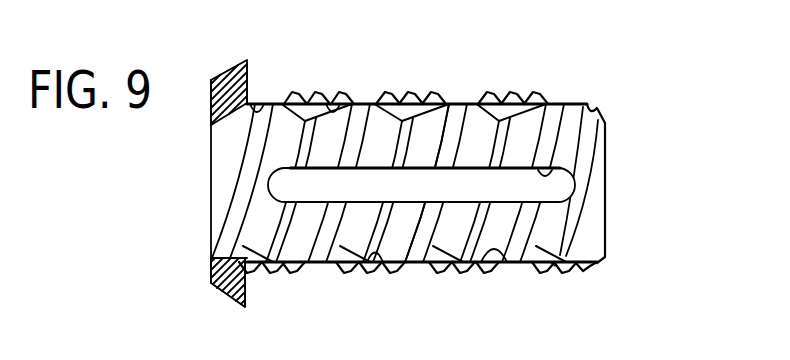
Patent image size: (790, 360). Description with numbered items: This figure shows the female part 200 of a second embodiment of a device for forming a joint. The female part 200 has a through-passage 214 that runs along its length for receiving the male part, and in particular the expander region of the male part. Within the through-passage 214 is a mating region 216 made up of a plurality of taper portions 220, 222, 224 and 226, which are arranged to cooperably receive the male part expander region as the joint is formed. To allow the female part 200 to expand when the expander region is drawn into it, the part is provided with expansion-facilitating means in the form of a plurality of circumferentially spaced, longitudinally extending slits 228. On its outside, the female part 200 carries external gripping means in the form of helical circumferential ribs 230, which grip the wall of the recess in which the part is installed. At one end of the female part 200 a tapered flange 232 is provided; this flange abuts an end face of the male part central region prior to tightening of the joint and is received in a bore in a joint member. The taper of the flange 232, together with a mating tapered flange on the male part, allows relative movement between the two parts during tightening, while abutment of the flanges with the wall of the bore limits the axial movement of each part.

The female part 200 is at (396, 288).
The through-passage 214 is at (587, 192).
The mating region 216 is at (425, 133).
The taper portion 220 is at (269, 103).
The taper portion 222 is at (334, 102).
The taper portion 224 is at (364, 256).
The taper portion 226 is at (512, 265).
The slits 228 is at (558, 168).
The helical circumferential ribs 230 is at (548, 277).
The tapered flange 232 is at (229, 66).